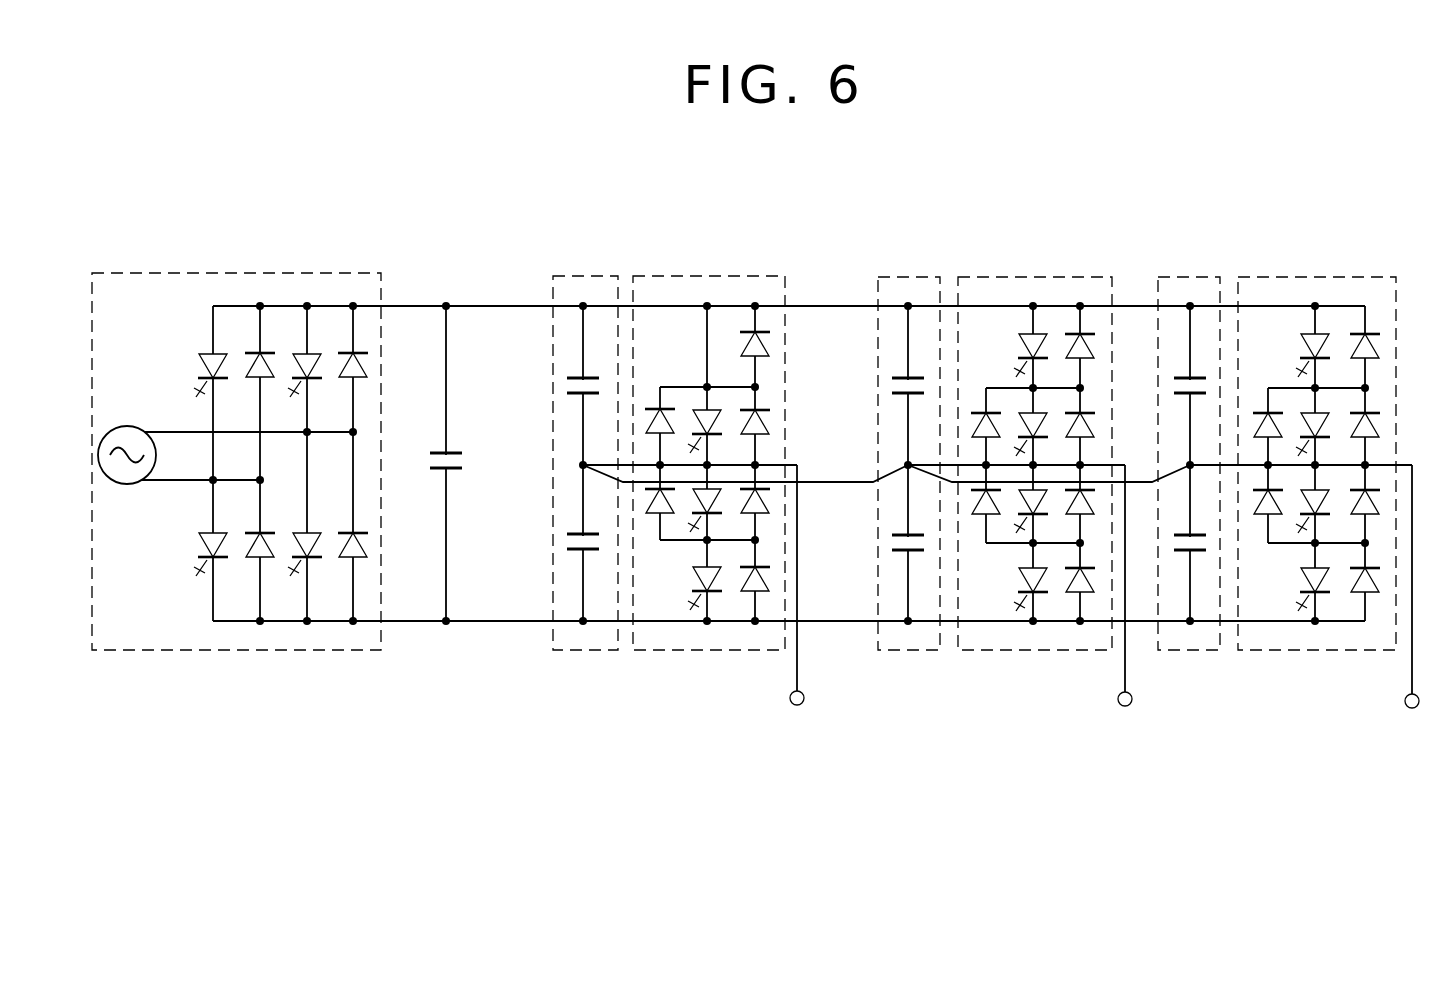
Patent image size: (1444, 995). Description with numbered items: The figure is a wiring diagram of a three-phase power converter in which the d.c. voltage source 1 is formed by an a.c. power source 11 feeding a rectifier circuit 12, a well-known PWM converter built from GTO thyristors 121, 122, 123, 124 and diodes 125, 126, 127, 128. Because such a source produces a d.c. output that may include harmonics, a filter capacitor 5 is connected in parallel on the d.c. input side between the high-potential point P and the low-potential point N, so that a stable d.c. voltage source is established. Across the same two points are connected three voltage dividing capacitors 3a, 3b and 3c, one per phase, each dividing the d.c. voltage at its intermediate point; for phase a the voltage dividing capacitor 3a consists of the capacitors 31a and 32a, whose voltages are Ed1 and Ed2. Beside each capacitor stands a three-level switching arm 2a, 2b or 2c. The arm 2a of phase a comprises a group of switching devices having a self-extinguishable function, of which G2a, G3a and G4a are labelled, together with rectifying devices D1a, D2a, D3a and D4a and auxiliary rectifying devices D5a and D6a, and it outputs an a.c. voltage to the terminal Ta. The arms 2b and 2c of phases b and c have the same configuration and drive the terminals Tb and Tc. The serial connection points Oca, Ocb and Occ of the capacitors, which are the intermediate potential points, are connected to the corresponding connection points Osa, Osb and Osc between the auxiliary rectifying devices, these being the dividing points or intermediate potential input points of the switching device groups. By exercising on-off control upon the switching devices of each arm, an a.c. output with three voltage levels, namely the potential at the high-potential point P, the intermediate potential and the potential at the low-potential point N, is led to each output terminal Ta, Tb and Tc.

The d.c. voltage source 1 is at (240, 274).
The a.c. power source 11 is at (118, 484).
The rectifier circuit 12 is at (297, 467).
The GTO thyristor 121 is at (200, 366).
The GTO thyristor 122 is at (198, 546).
The GTO thyristor 123 is at (298, 360).
The GTO thyristor 124 is at (312, 536).
The diode 125 is at (246, 379).
The diode 126 is at (247, 557).
The diode 127 is at (363, 369).
The diode 128 is at (363, 555).
The filter capacitor 5 is at (446, 453).
The voltage dividing capacitor 3a is at (592, 277).
The capacitor 31a is at (571, 385).
The capacitor 32a is at (567, 546).
The 3-level switching arm 2a is at (708, 277).
The rectifying device D1a is at (770, 348).
The rectifying device D2a is at (770, 430).
The rectifying device D3a is at (770, 500).
The rectifying device D4a is at (770, 583).
The auxiliary rectifying device D5a is at (648, 422).
The auxiliary rectifying device D6a is at (648, 505).
The switching device G2a is at (694, 411).
The switching device G3a is at (722, 512).
The switching device G4a is at (678, 590).
The voltage dividing capacitor 3b is at (913, 278).
The 3-level switching arm 2b is at (1034, 278).
The voltage dividing capacitor 3c is at (1195, 278).
The 3-level switching arm 2c is at (1312, 278).
The high-potential point P is at (789, 289).
The low-potential point N is at (789, 638).
The serial connection point Oca is at (714, 466).
The connection point Osa is at (690, 451).
The serial connection point Ocb is at (1018, 466).
The connection point Osb is at (1016, 449).
The serial connection point Occ is at (1162, 466).
The connection point Osc is at (1301, 449).
The output terminal Ta is at (794, 603).
The output terminal Tb is at (1122, 604).
The output terminal Tc is at (1409, 605).